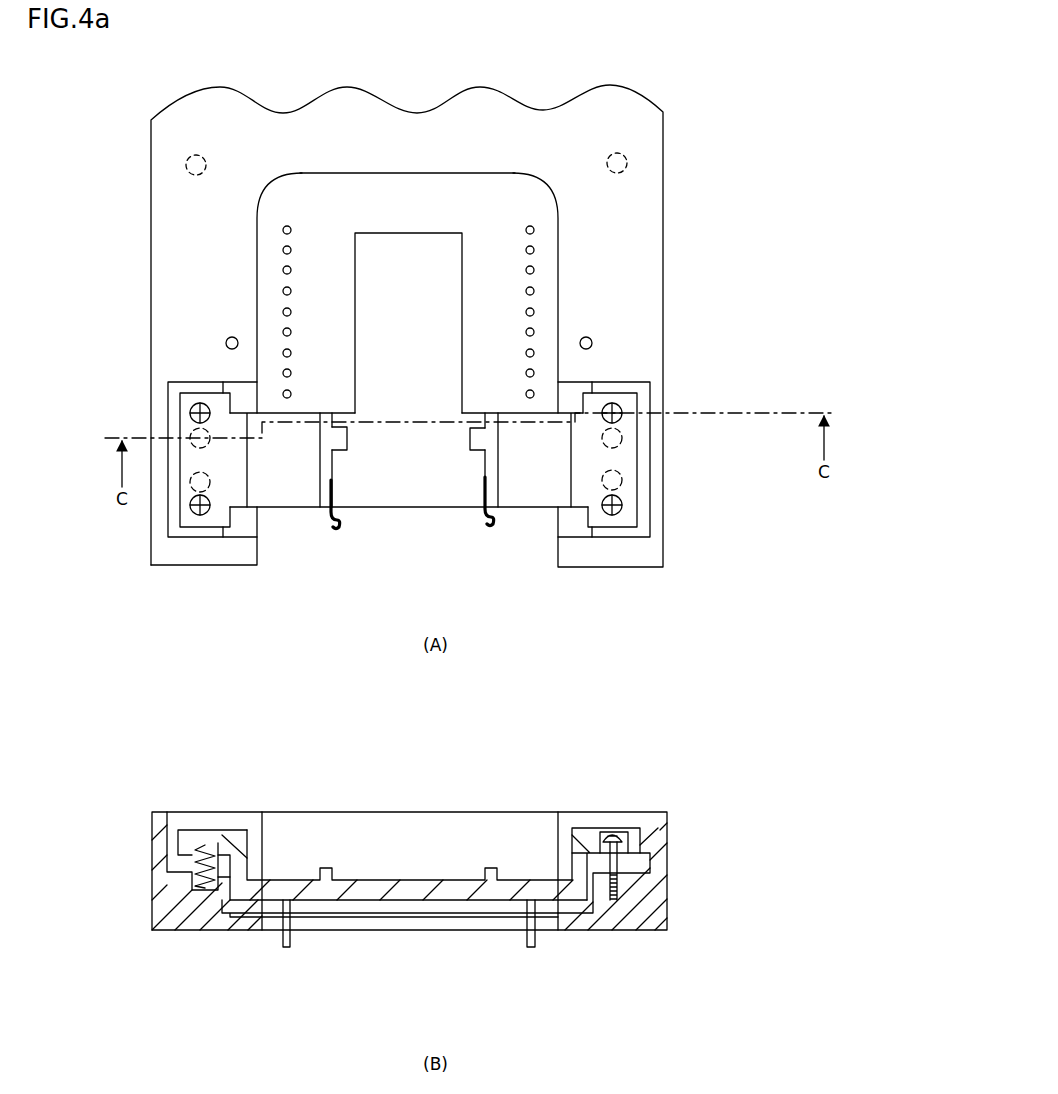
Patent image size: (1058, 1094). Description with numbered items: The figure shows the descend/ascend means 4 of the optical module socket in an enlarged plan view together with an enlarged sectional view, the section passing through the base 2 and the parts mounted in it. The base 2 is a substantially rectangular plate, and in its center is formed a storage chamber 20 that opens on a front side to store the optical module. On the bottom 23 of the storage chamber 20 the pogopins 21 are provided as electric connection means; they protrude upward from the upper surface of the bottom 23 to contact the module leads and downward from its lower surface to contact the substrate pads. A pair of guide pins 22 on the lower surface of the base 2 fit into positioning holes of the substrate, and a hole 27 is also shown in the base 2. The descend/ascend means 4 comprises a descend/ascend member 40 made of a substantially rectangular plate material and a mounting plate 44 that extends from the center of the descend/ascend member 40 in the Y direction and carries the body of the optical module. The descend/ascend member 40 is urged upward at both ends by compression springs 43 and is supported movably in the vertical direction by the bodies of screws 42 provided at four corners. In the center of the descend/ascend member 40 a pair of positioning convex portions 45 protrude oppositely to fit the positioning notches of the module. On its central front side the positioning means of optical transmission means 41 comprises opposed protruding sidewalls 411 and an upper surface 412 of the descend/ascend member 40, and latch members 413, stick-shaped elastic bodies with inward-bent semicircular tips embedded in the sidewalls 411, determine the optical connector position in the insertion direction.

The base 2 is at (668, 265).
The descend/ascend means 4 is at (641, 394).
The storage chamber 20 is at (418, 192).
The pogopins 21 is at (534, 246).
The guide pins 22 is at (626, 160).
The bottom 23 is at (320, 187).
The hole 27 is at (592, 342).
The descend/ascend member 40 is at (677, 443).
The positioning means of optical transmission means 41 is at (339, 470).
The screws 42 is at (620, 502).
The compression springs 43 is at (617, 481).
The mounting plate 44 is at (440, 330).
The positioning convex portions 45 is at (346, 444).
The sidewalls 411 is at (485, 478).
The upper surface 412 is at (430, 497).
The latch members 413 is at (327, 523).